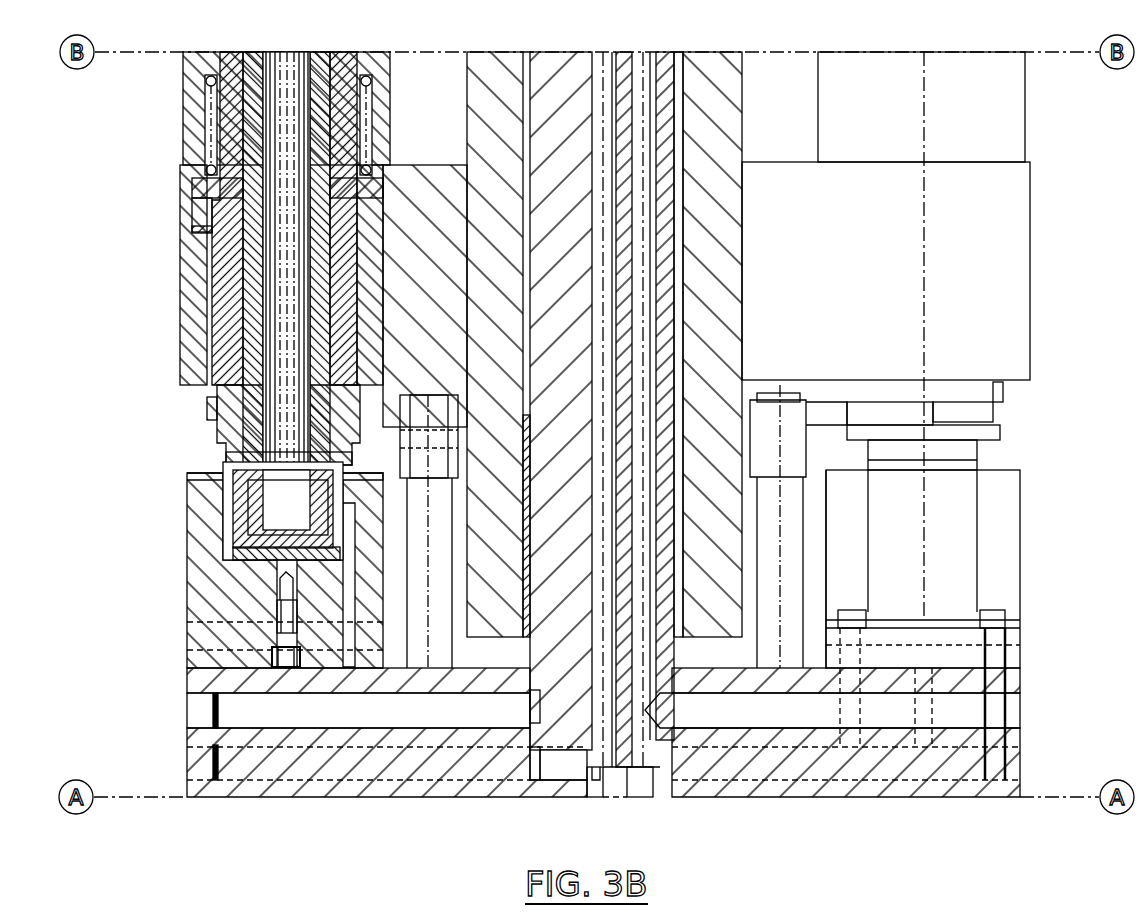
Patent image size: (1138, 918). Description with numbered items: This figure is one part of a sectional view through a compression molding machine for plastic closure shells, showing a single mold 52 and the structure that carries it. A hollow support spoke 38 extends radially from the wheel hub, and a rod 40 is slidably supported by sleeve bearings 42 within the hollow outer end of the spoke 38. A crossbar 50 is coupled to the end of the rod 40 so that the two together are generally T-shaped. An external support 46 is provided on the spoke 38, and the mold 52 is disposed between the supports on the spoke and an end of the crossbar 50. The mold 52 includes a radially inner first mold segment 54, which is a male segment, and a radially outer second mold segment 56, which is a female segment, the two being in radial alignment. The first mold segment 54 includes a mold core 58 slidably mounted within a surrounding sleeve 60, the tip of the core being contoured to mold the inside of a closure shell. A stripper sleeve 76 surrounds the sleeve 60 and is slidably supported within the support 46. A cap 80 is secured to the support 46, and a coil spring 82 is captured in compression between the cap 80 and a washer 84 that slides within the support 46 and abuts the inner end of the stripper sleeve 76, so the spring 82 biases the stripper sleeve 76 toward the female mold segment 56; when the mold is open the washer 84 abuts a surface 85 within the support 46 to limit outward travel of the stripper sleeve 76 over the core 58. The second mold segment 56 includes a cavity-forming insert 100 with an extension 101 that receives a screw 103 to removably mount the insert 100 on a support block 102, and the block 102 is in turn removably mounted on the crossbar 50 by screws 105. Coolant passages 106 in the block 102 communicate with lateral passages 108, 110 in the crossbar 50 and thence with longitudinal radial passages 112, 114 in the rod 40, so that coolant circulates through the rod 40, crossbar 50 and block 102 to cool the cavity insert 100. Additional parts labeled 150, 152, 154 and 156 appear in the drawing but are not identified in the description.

The support spoke 38 is at (740, 121).
The rod 40 is at (668, 232).
The sleeve bearings 42 is at (688, 420).
The external support 46 is at (183, 325).
The crossbar 50 is at (352, 788).
The mold 52 is at (160, 502).
The first mold segment 54 is at (214, 451).
The second mold segment 56 is at (177, 525).
The mold core 58 is at (253, 418).
The sleeve 60 is at (250, 258).
The stripper sleeve 76 is at (228, 297).
The cap 80 is at (197, 124).
The coil spring 82 is at (206, 171).
The washer 84 is at (192, 188).
The surface 85 is at (197, 224).
The cavity-forming insert 100 is at (253, 543).
The extension 101 is at (262, 598).
The support block 102 is at (205, 585).
The screw 103 is at (292, 653).
The screws 105 is at (1000, 612).
The coolant passages 106 is at (346, 675).
The lateral passage 108 is at (255, 718).
The lateral passage 110 is at (300, 782).
The longitudinal radial passage 112 is at (650, 742).
The longitudinal radial passage 114 is at (595, 752).
The bracket 150 is at (845, 418).
The clamp 152 is at (217, 410).
The screw 154 is at (441, 653).
The bracket arm 156 is at (812, 400).